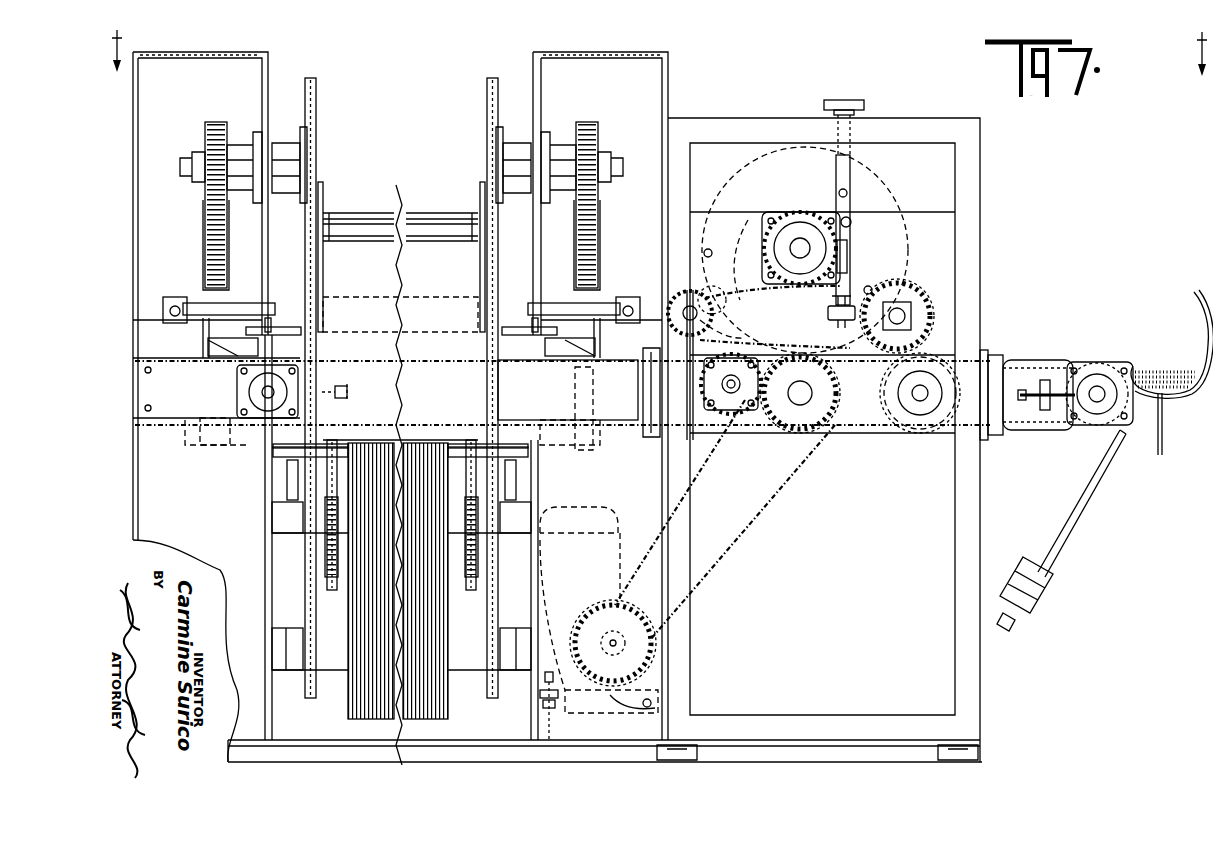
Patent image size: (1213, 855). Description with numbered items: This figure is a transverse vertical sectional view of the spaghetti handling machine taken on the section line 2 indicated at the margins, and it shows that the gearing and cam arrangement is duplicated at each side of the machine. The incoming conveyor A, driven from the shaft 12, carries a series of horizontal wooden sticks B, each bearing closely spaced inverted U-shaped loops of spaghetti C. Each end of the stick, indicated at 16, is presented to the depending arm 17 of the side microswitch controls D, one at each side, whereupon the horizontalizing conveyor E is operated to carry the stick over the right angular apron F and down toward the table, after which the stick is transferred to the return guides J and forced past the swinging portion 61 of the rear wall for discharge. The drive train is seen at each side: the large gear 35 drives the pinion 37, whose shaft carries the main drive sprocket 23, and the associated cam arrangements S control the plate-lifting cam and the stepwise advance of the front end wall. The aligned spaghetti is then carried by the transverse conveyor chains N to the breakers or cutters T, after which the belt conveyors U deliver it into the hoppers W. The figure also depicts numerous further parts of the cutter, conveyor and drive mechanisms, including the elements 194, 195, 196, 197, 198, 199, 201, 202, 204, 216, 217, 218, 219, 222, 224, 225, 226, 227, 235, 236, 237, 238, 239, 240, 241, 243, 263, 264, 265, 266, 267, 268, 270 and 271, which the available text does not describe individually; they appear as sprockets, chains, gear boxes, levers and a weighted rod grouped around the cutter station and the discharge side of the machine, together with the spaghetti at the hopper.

The section line 2- 2 is at (648, 53).
The shaft 12 is at (273, 518).
The end of the stick 16 is at (280, 462).
The depending arm 17 is at (287, 497).
The main drive sprocket 23 is at (317, 96).
The large gear 35 is at (205, 242).
The pinion 37 is at (205, 128).
The swinging portion of the rear wall 61 is at (545, 345).
The material 194 is at (452, 355).
The pin 195 is at (869, 286).
The bearing housing 196 is at (730, 412).
The chain 197 is at (730, 336).
The sprocket 198 is at (932, 300).
The sprocket 199 is at (680, 305).
The bracket 201 is at (242, 398).
The bearing housing 202 is at (240, 380).
The sprocket 204 is at (800, 395).
The bolt bracket 216 is at (806, 305).
The chain 217 is at (748, 218).
The gear 218 is at (733, 226).
The gear 219 is at (740, 306).
The bearing housing 222 is at (815, 212).
The link 224 is at (850, 233).
The lever 225 is at (850, 206).
The knob 226 is at (843, 100).
The pin 227 is at (704, 252).
The drive chain 235 is at (752, 534).
The pulley 236 is at (842, 400).
The sprocket teeth 237 is at (625, 614).
The hub 238 is at (618, 640).
The sprocket 239 is at (650, 657).
The belt guard 240 is at (598, 515).
The bracket 241 is at (660, 703).
The adjusting bolt 243 is at (338, 392).
The bearing housing 263 is at (1095, 400).
The flange 264 is at (1020, 336).
The shaft 265 is at (1100, 374).
The collar 266 is at (1045, 410).
The hopper 267 is at (1182, 396).
The rod 268 is at (1162, 455).
The link rod 270 is at (1085, 520).
The weight 271 is at (1040, 597).
The incoming conveyor A is at (325, 560).
The sticks B is at (508, 458).
The loops of spaghetti C is at (378, 443).
The side microswitch controls D is at (262, 440).
The horizontalizing conveyor E is at (316, 150).
The right angular apron F is at (387, 215).
The return guides J is at (522, 345).
The transverse conveyor chains N is at (447, 422).
The cam arrangements S is at (176, 290).
The breakers or cutters T is at (905, 243).
The belt conveyors U is at (1052, 362).
The hoppers W is at (1157, 310).